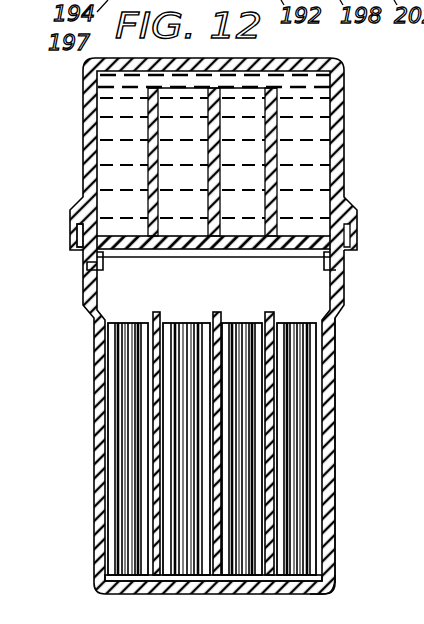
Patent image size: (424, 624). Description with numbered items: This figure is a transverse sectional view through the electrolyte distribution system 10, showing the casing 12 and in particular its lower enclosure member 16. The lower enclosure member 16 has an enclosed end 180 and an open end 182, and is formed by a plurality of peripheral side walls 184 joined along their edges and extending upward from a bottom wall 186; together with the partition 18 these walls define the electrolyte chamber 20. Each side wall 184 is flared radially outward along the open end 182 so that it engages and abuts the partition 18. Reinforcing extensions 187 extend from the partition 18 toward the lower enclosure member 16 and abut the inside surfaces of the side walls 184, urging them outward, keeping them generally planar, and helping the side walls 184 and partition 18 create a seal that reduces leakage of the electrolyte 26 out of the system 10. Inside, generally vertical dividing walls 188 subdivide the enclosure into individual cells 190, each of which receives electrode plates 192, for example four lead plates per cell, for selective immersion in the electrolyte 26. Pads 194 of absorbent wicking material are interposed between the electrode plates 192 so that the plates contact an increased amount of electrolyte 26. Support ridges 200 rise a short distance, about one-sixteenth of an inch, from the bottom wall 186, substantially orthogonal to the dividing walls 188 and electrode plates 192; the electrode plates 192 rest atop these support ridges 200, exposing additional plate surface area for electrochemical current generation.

The electrolyte distribution system 10 is at (83, 92).
The casing 12 is at (349, 147).
The lower enclosure member 16 is at (345, 287).
The partition 18 is at (78, 230).
The electrolyte chamber 20 is at (264, 294).
The electrolyte 26 is at (100, 148).
The enclosed end 180 is at (326, 535).
The open end 182 is at (331, 277).
The side walls 184 is at (333, 331).
The bottom wall 186 is at (103, 578).
The reinforcing extensions 187 is at (88, 268).
The dividing walls 188 is at (157, 310).
The cells 190 is at (322, 364).
The electrode plates 192 is at (312, 389).
The pads 194 is at (306, 411).
The support ridges 200 is at (332, 583).